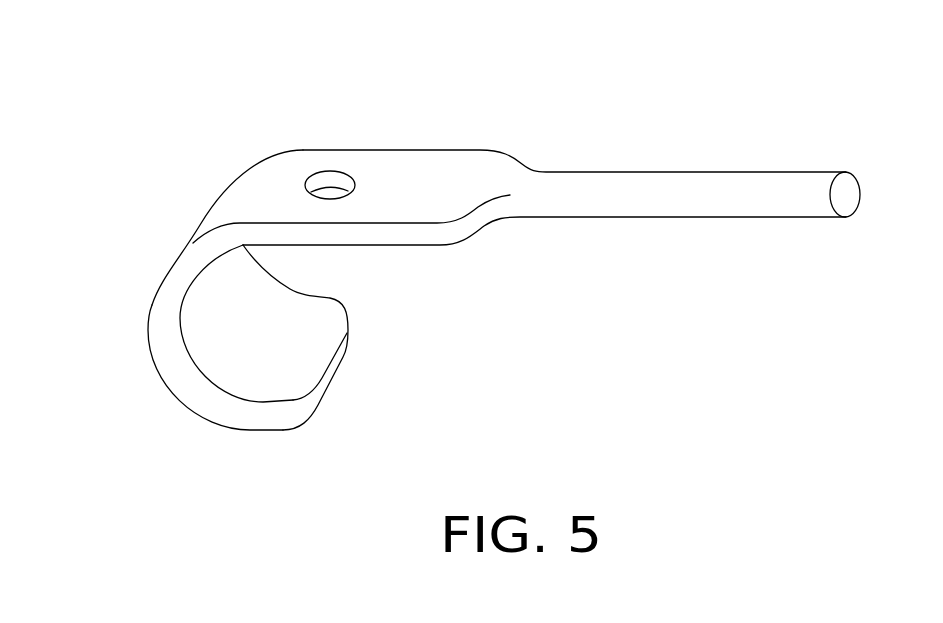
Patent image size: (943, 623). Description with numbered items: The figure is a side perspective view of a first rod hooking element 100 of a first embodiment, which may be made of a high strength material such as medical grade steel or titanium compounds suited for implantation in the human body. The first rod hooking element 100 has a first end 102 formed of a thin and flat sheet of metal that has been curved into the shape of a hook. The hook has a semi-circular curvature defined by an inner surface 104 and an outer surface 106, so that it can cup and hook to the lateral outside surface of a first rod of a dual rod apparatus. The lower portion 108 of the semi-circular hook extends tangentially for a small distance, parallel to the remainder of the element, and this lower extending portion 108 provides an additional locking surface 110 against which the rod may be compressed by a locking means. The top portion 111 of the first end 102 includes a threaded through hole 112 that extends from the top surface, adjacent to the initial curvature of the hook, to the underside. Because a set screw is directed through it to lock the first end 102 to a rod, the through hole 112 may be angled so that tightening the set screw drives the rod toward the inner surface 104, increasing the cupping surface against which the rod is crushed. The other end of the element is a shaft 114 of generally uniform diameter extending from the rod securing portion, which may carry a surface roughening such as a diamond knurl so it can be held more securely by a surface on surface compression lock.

The first rod hooking element 100 is at (456, 267).
The first end 102 is at (251, 323).
The inner surface 104 is at (228, 362).
The outer surface 106 is at (222, 203).
The lower portion 108 is at (246, 443).
The locking surface 110 is at (310, 362).
The top portion 111 is at (519, 148).
The through hole 112 is at (330, 182).
The shaft 114 is at (748, 185).